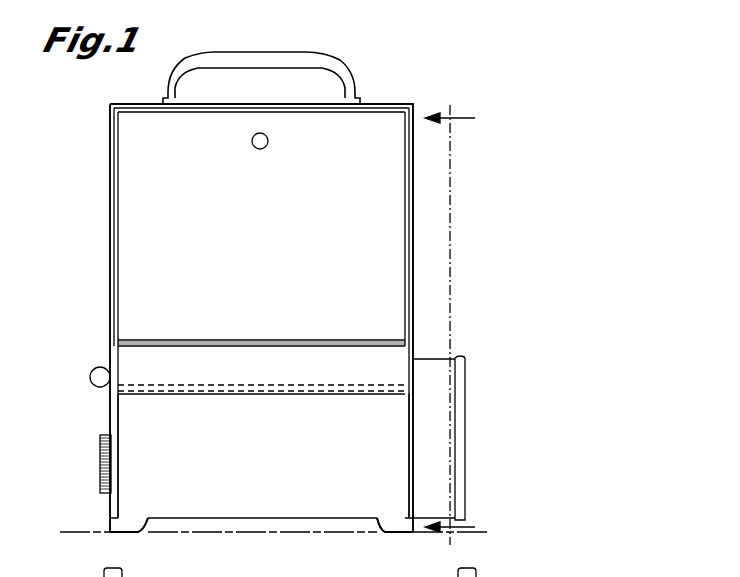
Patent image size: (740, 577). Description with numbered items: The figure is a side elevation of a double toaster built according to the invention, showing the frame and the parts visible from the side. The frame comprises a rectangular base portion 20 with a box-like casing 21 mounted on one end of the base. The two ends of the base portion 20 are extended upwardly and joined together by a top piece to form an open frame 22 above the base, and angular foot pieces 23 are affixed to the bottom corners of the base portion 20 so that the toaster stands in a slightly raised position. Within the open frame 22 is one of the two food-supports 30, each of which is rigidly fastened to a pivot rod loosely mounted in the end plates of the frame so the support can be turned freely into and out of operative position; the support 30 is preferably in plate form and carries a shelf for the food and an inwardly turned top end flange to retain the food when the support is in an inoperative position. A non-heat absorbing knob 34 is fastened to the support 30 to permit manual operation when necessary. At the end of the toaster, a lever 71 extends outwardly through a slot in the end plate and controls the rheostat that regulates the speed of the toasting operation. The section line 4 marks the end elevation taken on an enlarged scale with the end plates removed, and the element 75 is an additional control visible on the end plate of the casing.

The section line 4- 4 is at (450, 323).
The rectangular base portion 20 is at (263, 456).
The box-like casing 21 is at (468, 465).
The open frame 22 is at (234, 292).
The angular foot pieces 23 is at (128, 526).
The food-support 30 is at (261, 281).
The non-heat absorbing knob 34 is at (269, 141).
The lever 71 is at (89, 378).
The knob 75 is at (99, 463).